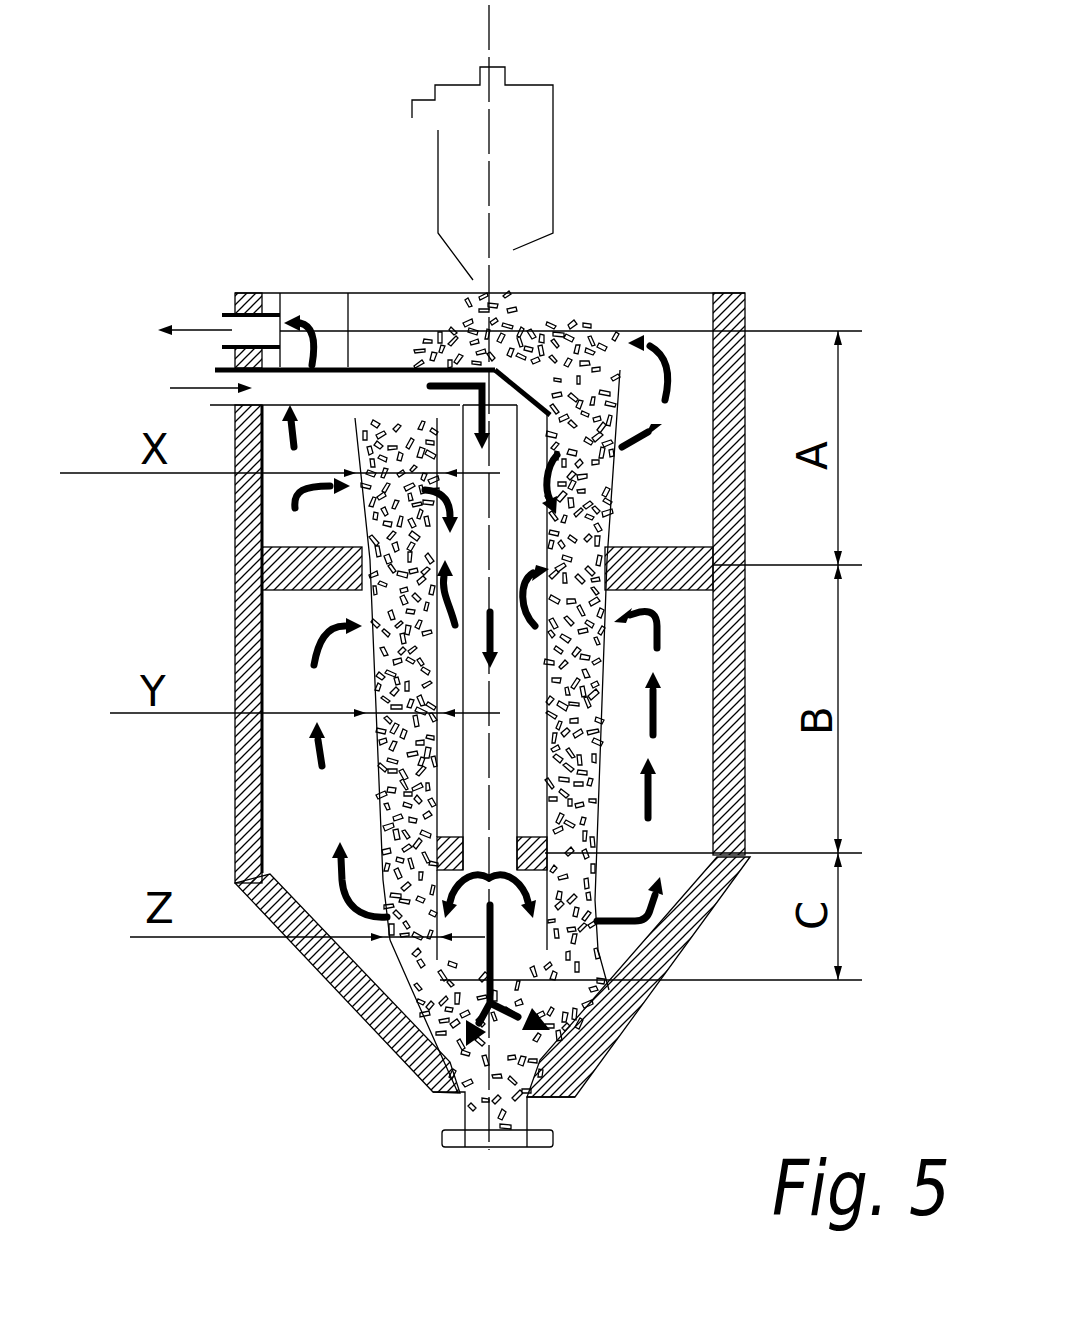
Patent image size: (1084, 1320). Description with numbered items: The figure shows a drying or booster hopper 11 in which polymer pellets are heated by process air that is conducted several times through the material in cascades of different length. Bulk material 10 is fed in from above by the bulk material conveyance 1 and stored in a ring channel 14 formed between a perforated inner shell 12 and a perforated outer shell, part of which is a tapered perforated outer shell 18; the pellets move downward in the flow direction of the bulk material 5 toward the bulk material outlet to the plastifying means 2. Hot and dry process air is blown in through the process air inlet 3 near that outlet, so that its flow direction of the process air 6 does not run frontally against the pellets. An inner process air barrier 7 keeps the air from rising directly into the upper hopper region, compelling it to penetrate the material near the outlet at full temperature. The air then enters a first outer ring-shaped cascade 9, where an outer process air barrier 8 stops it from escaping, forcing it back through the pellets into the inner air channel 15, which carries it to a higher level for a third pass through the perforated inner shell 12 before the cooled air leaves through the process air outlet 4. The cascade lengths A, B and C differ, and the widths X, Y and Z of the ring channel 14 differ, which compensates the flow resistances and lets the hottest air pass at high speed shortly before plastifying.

The bulk material conveyance 1 is at (512, 263).
The bulk material outlet to the plastifying means 2 is at (458, 1135).
The process air inlet 3 is at (245, 375).
The process air outlet 4 is at (225, 328).
The flow direction of the bulk material 5 is at (603, 412).
The flow direction of the process air 6 is at (668, 705).
The inner process air barrier 7 is at (383, 938).
The outer process air barrier 8 is at (258, 549).
The cascade with ring-shaped process air flow 9 is at (298, 824).
The bulk material 10 is at (578, 340).
The drying or booster hopper 11 is at (637, 1007).
The perforated inner shell 12 is at (605, 843).
The ring channel for bulk material 14 is at (383, 778).
The inner air channel 15 is at (607, 528).
The tapered perforated outer shell 18 is at (590, 953).